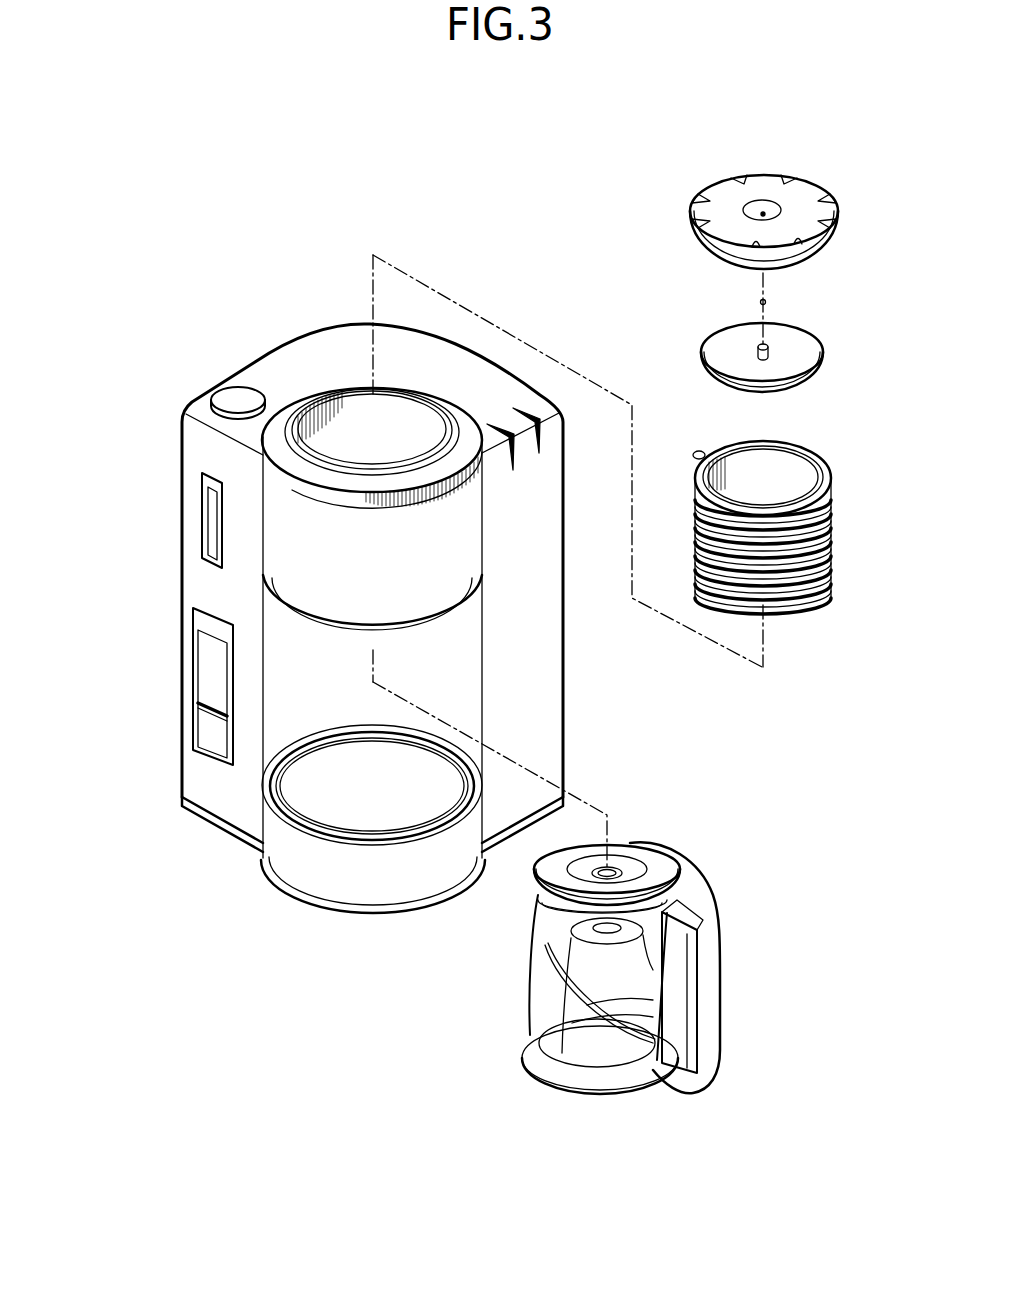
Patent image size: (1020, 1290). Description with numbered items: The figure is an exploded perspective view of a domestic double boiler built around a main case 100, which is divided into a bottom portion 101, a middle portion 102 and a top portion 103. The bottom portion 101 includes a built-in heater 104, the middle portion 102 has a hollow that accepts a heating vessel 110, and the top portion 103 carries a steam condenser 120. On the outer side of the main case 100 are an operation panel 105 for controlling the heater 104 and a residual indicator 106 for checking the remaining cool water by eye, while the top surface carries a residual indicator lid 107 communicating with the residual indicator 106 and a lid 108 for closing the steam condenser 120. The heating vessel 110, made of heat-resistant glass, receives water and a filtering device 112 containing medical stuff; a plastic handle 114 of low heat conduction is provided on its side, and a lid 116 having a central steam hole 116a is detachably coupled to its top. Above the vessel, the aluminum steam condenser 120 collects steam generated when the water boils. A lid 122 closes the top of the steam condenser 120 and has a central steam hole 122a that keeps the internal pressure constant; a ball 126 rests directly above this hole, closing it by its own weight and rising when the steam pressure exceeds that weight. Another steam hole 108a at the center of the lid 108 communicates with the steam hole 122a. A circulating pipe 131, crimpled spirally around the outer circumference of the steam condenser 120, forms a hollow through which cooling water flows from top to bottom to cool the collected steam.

The main case 100 is at (576, 697).
The bottom portion 101 is at (302, 868).
The middle portion 102 is at (300, 740).
The top portion 103 is at (470, 523).
The heater 104 is at (342, 782).
The operation panel 105 is at (210, 667).
The residual indicator 106 is at (203, 522).
The residual indicator lid 107 is at (240, 388).
The lid 108 is at (757, 183).
The steam hole 108a is at (766, 211).
The heating vessel 110 is at (548, 922).
The filtering device 112 is at (543, 950).
The handle 114 is at (707, 998).
The lid 116 is at (690, 858).
The steam hole 116a is at (612, 868).
The steam condenser 120 is at (785, 478).
The lid 122 is at (806, 342).
The steam hole 122a is at (768, 345).
The ball 126 is at (759, 301).
The circulating pipe 131 is at (835, 537).